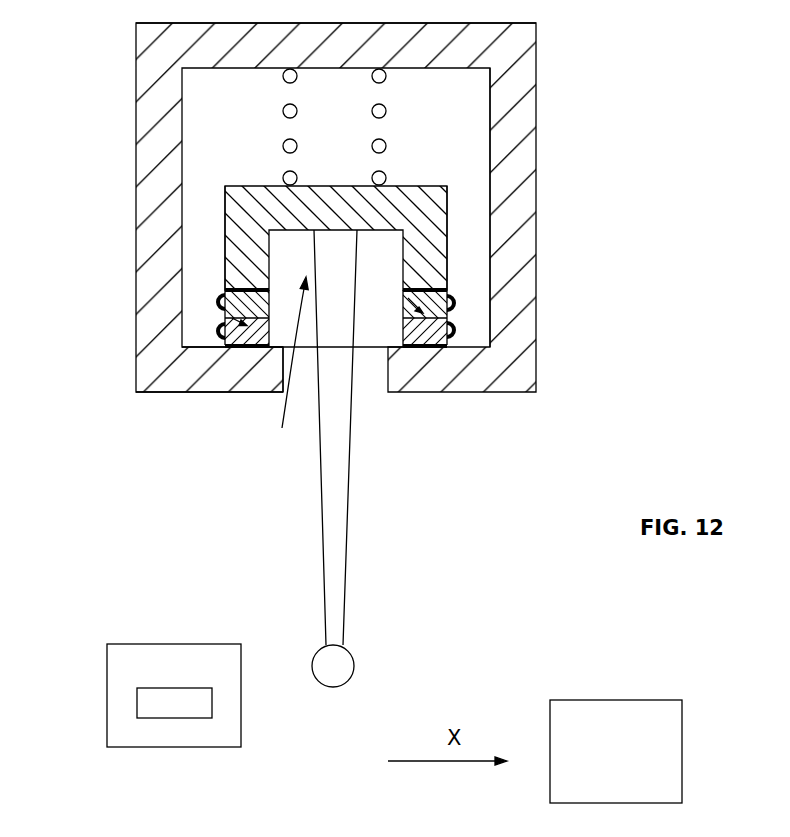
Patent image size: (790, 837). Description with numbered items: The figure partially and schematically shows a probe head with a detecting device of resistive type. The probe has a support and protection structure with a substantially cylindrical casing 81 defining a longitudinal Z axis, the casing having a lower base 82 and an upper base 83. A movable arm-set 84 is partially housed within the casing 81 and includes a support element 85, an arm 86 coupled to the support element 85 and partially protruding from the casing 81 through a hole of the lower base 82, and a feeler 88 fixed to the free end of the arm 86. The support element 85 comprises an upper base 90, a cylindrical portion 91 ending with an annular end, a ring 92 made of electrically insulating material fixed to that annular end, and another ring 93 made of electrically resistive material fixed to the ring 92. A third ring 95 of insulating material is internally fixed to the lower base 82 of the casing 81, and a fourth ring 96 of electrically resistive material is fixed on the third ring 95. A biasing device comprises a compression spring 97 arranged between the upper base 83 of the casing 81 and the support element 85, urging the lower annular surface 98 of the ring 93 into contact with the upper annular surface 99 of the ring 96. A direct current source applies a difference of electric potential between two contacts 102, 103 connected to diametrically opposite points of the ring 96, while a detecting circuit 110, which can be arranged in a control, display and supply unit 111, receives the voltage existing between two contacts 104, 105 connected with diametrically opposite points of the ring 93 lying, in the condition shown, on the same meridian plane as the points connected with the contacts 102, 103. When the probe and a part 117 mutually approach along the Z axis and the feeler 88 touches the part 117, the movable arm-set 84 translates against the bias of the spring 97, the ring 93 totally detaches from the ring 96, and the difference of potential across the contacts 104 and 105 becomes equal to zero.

The casing 81 is at (145, 80).
The upper base 83 is at (272, 36).
The compression spring 97 is at (283, 146).
The upper base 90 is at (265, 194).
The cylindrical portion 91 is at (226, 233).
The ring 92 is at (221, 296).
The contact 105 is at (238, 323).
The lower annular surface 98 is at (221, 333).
The contact 103 is at (197, 362).
The third ring 95 is at (235, 376).
The lower base 82 is at (236, 378).
The movable arm-set 84 is at (330, 363).
The upper annular surface 99 is at (404, 292).
The support element 85 is at (468, 238).
The ring 93 is at (434, 285).
The contact 104 is at (452, 330).
The contact 102 is at (450, 334).
The fourth ring 96 is at (443, 346).
The arm 86 is at (336, 503).
The feeler 88 is at (342, 667).
The control, display and supply unit 111 is at (135, 660).
The detecting circuit 110 is at (160, 702).
The part 117 is at (645, 723).